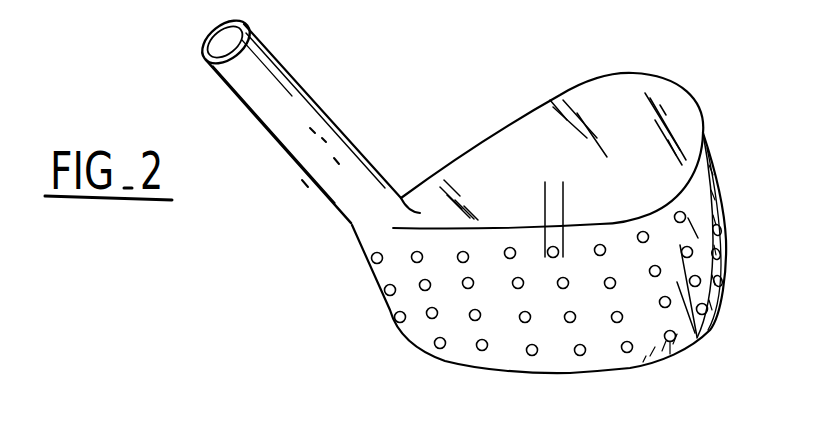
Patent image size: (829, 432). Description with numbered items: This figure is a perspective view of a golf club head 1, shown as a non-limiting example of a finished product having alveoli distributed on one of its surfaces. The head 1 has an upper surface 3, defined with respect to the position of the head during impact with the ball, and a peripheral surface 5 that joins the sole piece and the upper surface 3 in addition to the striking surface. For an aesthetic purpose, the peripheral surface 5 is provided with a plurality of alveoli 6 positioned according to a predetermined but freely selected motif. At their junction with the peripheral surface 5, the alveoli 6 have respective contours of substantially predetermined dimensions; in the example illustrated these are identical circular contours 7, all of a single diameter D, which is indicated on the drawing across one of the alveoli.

The head 1 is at (562, 220).
The upper surface 3 is at (523, 132).
The peripheral surface 5 is at (607, 352).
The alveoli 6 is at (697, 340).
The circular contour 7 is at (535, 358).
The diameter D is at (580, 192).